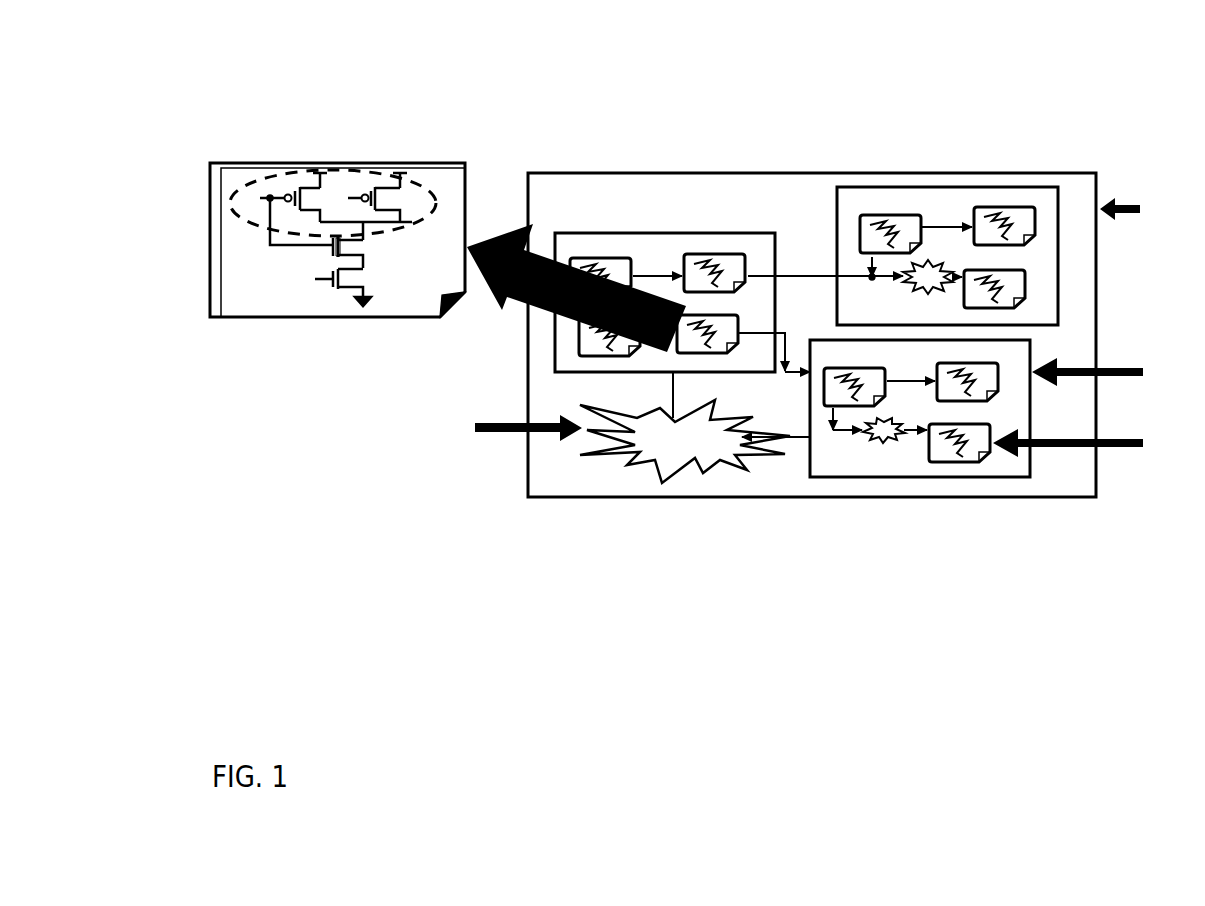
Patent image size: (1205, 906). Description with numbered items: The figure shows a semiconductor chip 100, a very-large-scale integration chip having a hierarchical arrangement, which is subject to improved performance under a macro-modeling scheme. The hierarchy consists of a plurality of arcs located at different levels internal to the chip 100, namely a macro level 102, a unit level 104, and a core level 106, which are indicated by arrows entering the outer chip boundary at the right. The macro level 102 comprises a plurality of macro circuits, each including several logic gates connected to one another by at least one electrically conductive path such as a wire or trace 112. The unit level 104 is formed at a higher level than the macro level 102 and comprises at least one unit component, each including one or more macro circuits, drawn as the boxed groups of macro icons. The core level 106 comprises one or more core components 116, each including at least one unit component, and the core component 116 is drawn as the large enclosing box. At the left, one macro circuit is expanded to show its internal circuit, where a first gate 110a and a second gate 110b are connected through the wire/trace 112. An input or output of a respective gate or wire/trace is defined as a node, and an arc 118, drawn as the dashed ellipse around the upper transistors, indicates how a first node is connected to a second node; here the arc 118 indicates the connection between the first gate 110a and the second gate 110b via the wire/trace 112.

The semiconductor chip 100 is at (757, 128).
The macro level 102 is at (1094, 437).
The unit level 104 is at (1114, 368).
The core level 106 is at (1152, 207).
The first gate 110a is at (300, 192).
The second gate 110b is at (375, 188).
The wire/trace 112 is at (343, 217).
The core component 116 is at (1050, 171).
The arc 118 is at (250, 178).